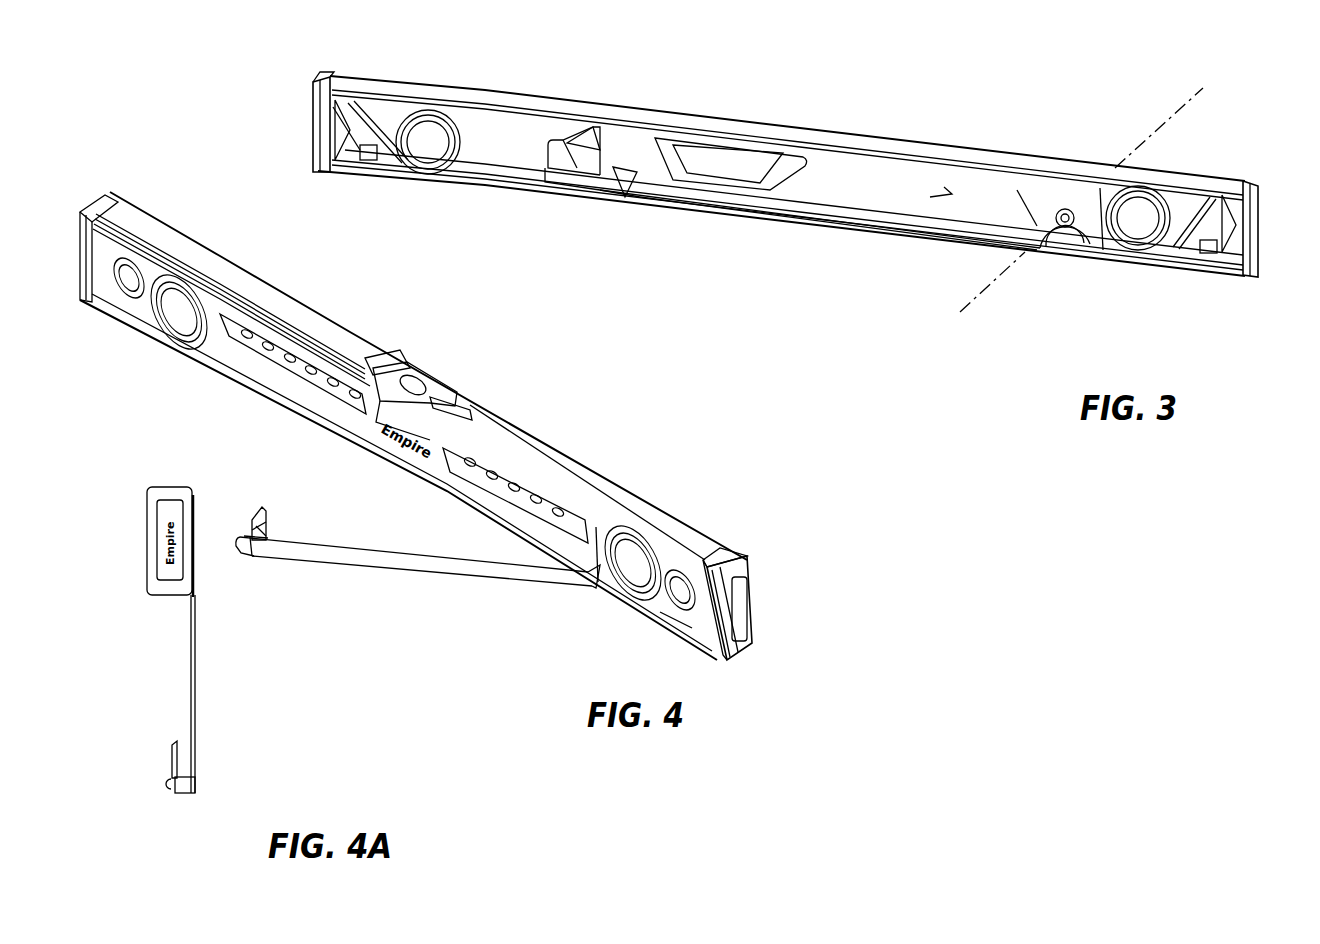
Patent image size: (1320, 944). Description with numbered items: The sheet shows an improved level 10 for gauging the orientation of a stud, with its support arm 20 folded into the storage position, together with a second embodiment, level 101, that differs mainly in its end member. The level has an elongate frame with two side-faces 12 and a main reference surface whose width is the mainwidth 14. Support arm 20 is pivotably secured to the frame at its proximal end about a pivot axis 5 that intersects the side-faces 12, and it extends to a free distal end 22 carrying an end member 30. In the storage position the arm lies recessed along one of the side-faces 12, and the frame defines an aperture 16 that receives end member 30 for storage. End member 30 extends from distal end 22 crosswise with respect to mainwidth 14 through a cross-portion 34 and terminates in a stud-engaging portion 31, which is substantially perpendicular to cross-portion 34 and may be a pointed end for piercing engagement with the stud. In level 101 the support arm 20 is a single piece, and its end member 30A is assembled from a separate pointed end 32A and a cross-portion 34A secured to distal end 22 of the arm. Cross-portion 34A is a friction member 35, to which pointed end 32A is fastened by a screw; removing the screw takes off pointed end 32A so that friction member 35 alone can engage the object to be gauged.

In FIG. 3, the level 10 is at (953, 102).
In FIG. 3, the side-faces 12 is at (497, 160).
In FIG. 3, the aperture 16 is at (595, 153).
In FIG. 3, the end member 30 is at (575, 147).
In FIG. 3, the cross-portion 34 is at (577, 173).
In FIG. 3, the support arm 20 is at (793, 225).
In FIG. 4, the support arm 20 is at (443, 563).
In FIG. 4A, the support arm 20 is at (195, 650).
In FIG. 3, the pivot axis 5 is at (1020, 256).
In FIG. 4, the level 101 is at (530, 450).
In FIG. 4, the mainwidth 14 is at (745, 650).
In FIG. 4, the free distal end 22 is at (248, 556).
In FIG. 4, the end member 30A is at (248, 536).
In FIG. 4, the pointed end 32A is at (264, 515).
In FIG. 4A, the pointed end 32A is at (172, 758).
In FIG. 4, the cross-portion 34A is at (268, 530).
In FIG. 4A, the stud-engaging portion 31 is at (166, 786).
In FIG. 4A, the friction member 35 is at (185, 790).